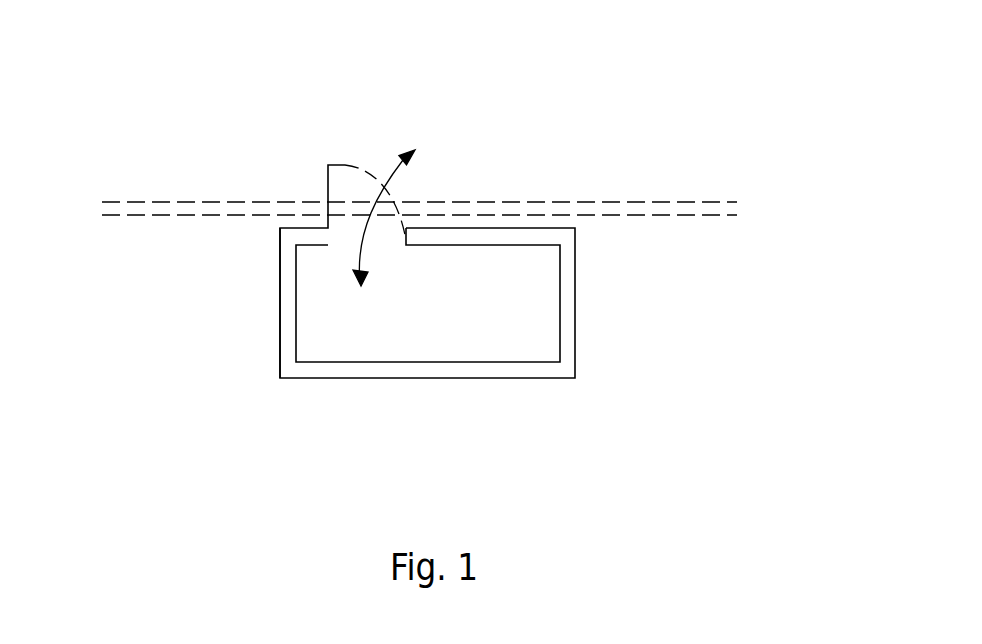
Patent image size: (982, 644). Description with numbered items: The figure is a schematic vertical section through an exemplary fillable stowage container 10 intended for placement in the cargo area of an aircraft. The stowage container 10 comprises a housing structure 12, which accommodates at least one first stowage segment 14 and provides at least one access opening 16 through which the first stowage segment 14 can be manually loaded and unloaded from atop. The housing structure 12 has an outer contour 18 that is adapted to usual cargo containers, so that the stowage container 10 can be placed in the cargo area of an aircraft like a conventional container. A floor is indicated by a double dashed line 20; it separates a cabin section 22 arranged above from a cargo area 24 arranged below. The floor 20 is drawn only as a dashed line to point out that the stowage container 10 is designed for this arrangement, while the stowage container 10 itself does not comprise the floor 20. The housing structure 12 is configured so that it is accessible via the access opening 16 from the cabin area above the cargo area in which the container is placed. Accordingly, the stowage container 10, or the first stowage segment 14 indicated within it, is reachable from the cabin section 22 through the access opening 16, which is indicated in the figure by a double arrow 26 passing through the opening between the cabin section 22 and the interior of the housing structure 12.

The fillable stowage container 10 is at (621, 289).
The housing structure 12 is at (482, 379).
The first stowage segment 14 is at (527, 270).
The access opening 16 is at (356, 150).
The outer contour 18 is at (280, 297).
The floor 20 is at (233, 200).
The cabin section 22 is at (122, 135).
The cargo area 24 is at (122, 280).
The double arrow 26 is at (392, 197).